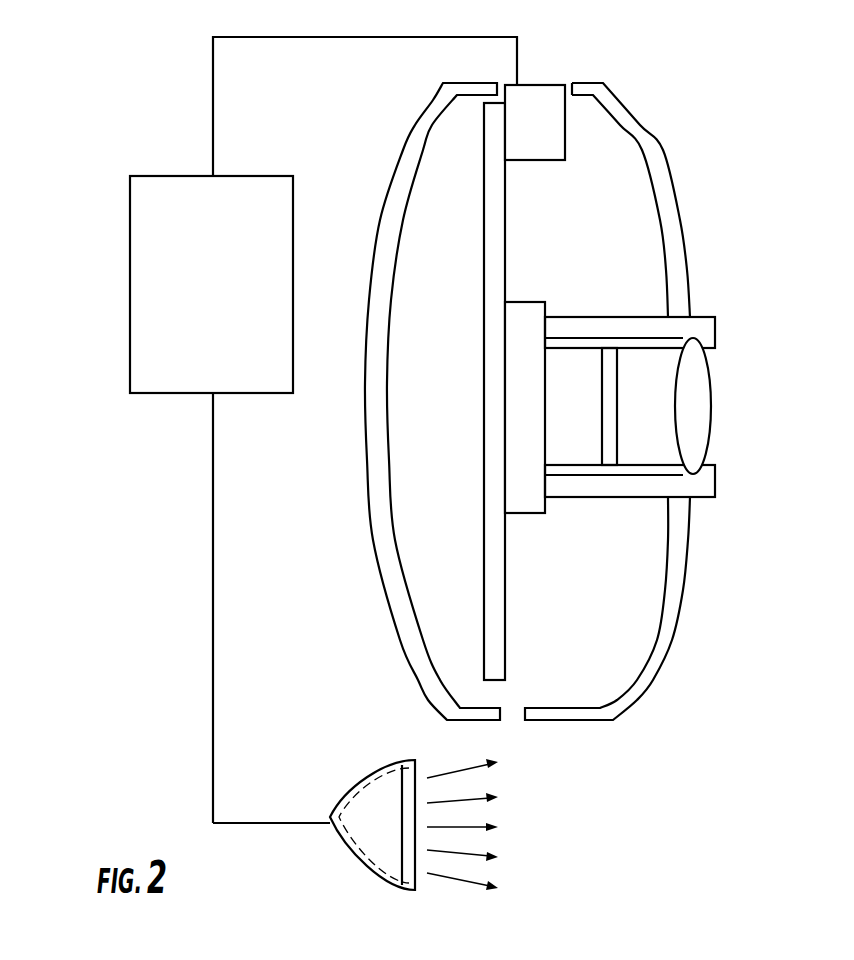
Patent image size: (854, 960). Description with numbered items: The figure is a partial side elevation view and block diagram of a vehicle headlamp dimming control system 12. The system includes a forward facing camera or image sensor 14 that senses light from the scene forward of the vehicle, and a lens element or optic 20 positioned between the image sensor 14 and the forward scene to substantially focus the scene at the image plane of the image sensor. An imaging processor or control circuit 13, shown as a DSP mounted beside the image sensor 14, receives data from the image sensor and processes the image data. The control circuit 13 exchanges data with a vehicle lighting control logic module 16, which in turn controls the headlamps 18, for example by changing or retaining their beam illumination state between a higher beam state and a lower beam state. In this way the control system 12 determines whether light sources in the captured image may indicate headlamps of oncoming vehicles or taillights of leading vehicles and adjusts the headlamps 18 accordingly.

The vehicle headlamp dimming control system 12 is at (128, 116).
The control circuit 13 is at (542, 84).
The image sensor 14 is at (533, 313).
The vehicle lighting control logic module 16 is at (158, 393).
The headlamps 18 is at (367, 843).
The optic 20 is at (697, 380).